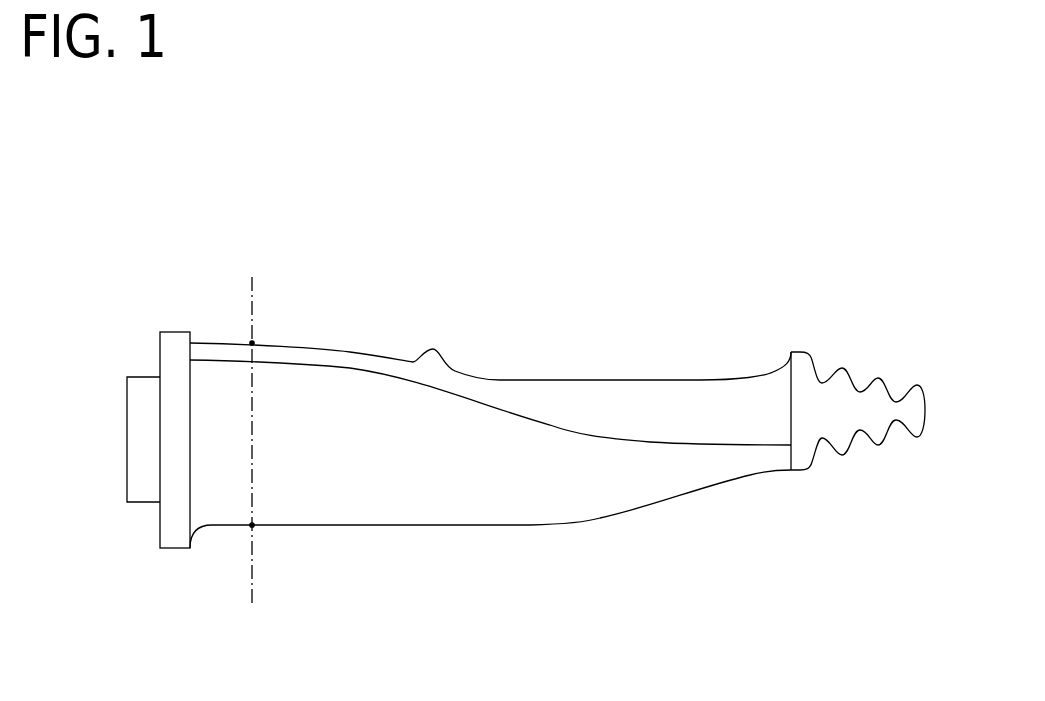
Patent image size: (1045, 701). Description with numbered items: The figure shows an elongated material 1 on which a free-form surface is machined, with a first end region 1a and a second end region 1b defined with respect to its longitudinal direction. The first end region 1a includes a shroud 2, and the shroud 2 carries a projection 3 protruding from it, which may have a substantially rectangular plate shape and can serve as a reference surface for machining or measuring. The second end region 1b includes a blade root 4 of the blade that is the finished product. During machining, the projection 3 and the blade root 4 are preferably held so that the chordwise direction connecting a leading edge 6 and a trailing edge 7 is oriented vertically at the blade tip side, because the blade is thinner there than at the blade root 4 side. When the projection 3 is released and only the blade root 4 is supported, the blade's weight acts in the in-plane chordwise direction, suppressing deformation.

The elongated material 1 is at (146, 152).
The first end region 1a is at (200, 295).
The second end region 1b is at (855, 295).
The shroud 2 is at (177, 535).
The projection 3 is at (140, 438).
The blade root 4 is at (875, 425).
The leading edge 6 is at (252, 343).
The trailing edge 7 is at (252, 525).